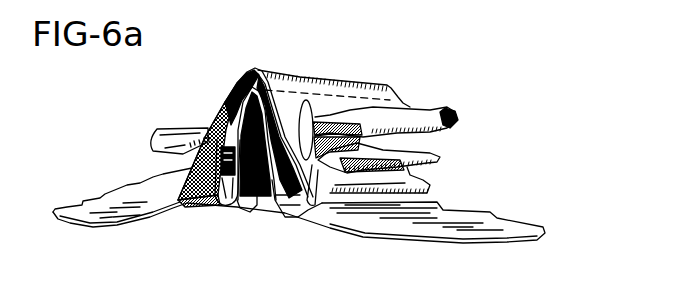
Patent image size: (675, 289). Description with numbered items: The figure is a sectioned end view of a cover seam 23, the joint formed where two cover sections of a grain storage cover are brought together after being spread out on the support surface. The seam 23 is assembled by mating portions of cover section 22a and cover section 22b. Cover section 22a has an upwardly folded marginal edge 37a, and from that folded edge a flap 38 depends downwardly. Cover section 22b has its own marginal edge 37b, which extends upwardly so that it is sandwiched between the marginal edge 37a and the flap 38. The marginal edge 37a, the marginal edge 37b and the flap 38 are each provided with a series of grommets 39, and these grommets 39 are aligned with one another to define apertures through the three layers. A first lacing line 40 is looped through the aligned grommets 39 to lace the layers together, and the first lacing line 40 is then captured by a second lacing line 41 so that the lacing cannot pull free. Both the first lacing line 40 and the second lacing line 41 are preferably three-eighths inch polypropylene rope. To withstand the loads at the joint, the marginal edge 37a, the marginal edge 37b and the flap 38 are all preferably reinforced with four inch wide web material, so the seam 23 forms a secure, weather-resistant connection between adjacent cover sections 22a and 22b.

The seam 23 is at (245, 47).
The flap 38 is at (283, 97).
The second lacing line 41 is at (430, 107).
The marginal edge 37a is at (218, 97).
The marginal edge 37b is at (247, 203).
The grommets 39 is at (226, 203).
The first lacing line 40 is at (160, 150).
The cover section 22a is at (120, 207).
The cover section 22b is at (405, 227).